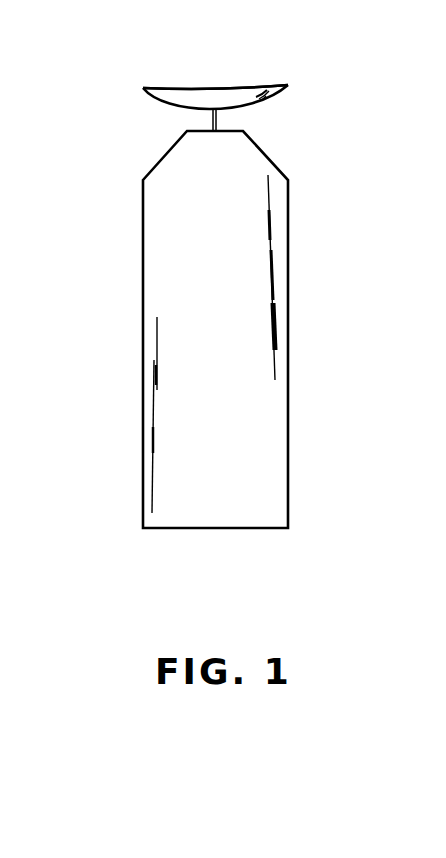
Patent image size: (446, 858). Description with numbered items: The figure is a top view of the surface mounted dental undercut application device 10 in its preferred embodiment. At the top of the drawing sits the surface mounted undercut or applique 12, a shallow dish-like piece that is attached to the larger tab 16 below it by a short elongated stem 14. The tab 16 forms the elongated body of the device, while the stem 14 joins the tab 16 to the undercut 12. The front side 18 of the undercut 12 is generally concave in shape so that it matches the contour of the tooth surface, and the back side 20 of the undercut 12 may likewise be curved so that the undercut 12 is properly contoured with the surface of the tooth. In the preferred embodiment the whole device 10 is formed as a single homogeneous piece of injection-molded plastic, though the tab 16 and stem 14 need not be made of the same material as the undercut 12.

The surface mounted dental undercut application device 10 is at (174, 329).
The surface mounted undercut 12 is at (197, 100).
The elongated stem 14 is at (209, 120).
The tab 16 is at (142, 240).
The front side 18 is at (220, 89).
The back side 20 is at (257, 101).